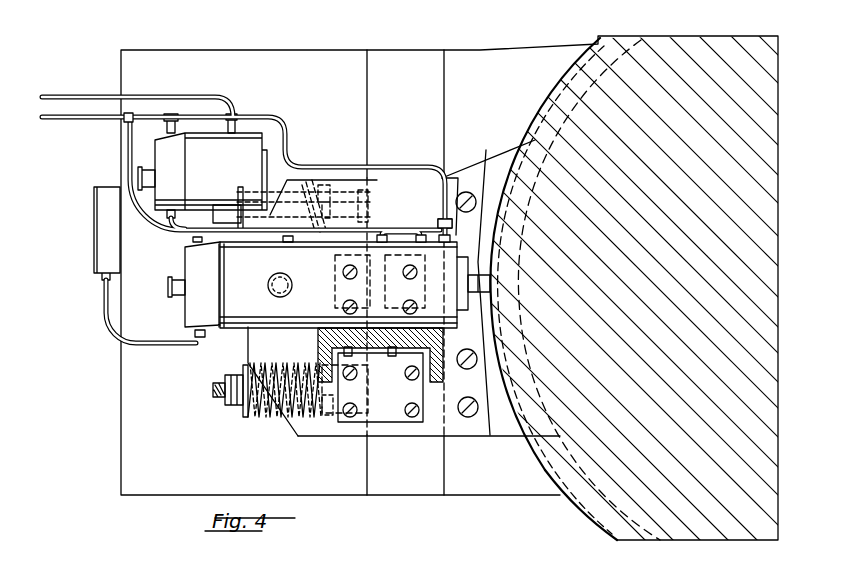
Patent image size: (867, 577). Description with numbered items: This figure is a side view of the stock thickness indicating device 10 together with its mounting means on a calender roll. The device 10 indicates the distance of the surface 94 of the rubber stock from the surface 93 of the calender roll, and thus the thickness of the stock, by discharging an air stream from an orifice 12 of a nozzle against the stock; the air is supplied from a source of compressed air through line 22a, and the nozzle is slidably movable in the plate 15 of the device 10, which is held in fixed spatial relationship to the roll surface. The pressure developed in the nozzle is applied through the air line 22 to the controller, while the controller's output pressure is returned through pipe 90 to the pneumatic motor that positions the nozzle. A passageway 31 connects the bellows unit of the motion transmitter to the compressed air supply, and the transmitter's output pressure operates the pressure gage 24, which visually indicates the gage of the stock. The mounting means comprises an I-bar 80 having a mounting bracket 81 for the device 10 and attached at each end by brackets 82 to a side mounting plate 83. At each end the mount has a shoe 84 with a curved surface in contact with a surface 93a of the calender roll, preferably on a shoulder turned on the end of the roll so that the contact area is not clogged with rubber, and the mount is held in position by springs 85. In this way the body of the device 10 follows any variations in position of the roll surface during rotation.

The device 10 is at (207, 335).
The orifice 12 is at (472, 314).
The plate 15 is at (456, 257).
The air line 22 is at (434, 220).
The line 22a is at (416, 155).
The pressure gage 24 is at (94, 253).
The passageway 31 is at (170, 236).
The I-bar 80 is at (320, 340).
The mounting bracket 81 is at (398, 227).
The brackets 82 is at (338, 275).
The side mounting plate 83 is at (457, 177).
The shoe 84 is at (542, 140).
The springs 85 is at (317, 225).
The pipe 90 is at (290, 242).
The surface of calender roll 93 is at (580, 508).
The surface 93a is at (639, 537).
The surface of rubber stock 94 is at (541, 456).